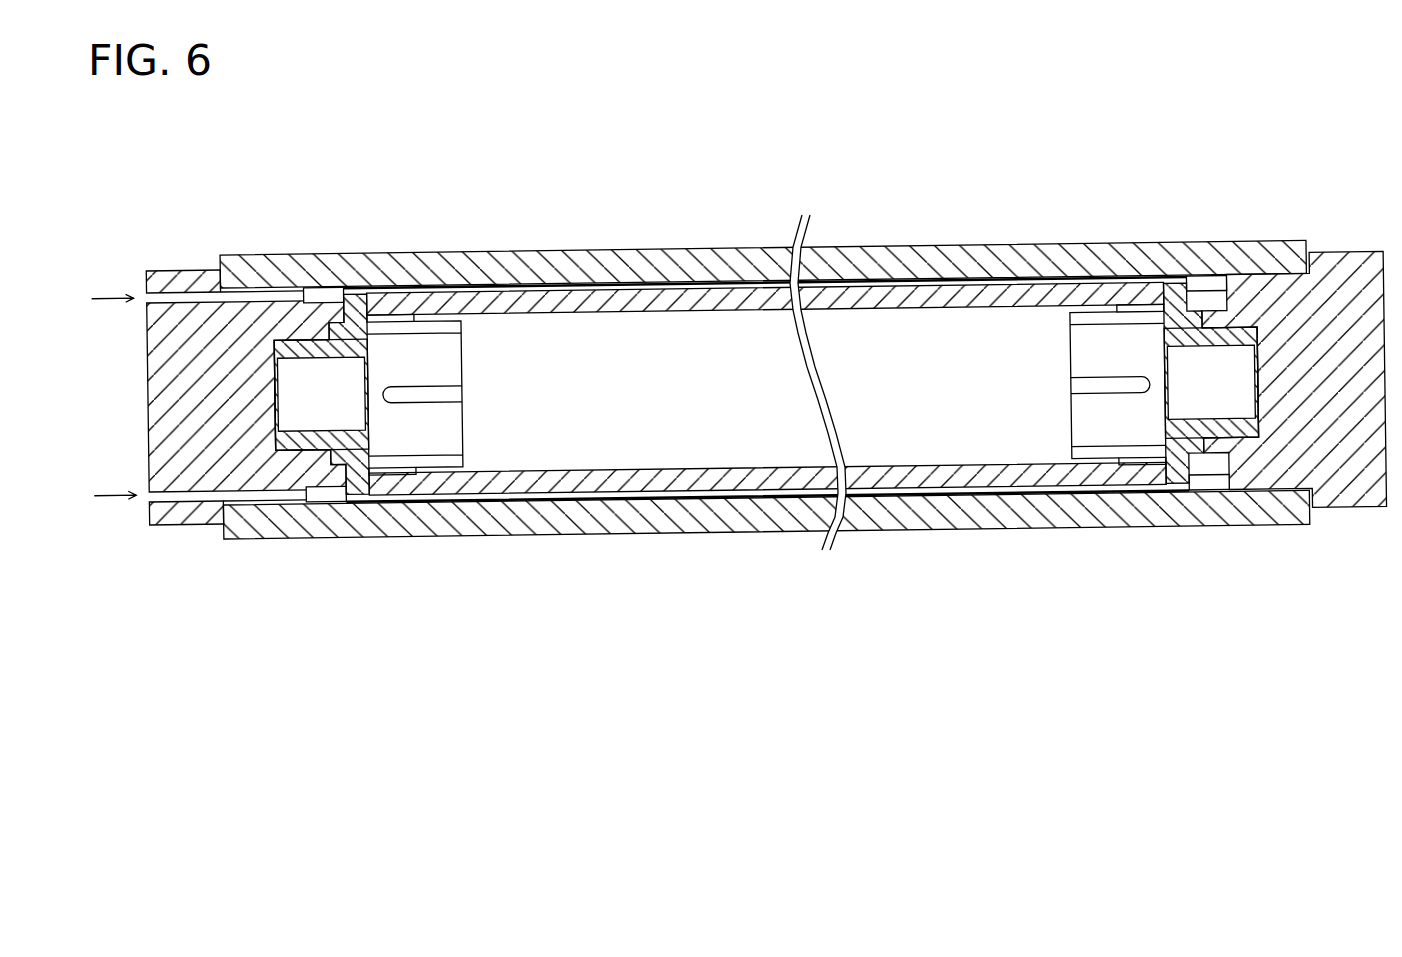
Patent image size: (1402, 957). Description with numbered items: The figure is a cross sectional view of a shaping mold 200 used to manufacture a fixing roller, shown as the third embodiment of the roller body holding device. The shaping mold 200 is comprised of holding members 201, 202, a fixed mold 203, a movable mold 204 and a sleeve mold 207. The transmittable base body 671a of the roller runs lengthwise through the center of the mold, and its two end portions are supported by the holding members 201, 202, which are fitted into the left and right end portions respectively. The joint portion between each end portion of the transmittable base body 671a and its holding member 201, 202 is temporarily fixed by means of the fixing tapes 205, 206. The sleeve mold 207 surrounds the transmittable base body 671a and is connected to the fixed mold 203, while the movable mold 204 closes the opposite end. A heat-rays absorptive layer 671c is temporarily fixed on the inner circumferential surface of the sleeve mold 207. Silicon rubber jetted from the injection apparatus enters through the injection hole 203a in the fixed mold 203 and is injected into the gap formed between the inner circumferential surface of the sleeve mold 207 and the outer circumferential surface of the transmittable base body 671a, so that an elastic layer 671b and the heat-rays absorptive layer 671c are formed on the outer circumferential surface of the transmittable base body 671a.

The shaping mold 200 is at (742, 187).
The holding member 201 is at (340, 290).
The holding member 202 is at (1188, 280).
The fixed mold 203 is at (170, 270).
The injection hole 203a is at (203, 297).
The movable mold 204 is at (1320, 268).
The fixing tape 205 is at (372, 497).
The fixing tape 206 is at (1170, 488).
The sleeve mold 207 is at (600, 250).
The transmittable base body 671a is at (932, 478).
The elastic layer 671b is at (590, 500).
The heat-rays absorptive layer 671c is at (525, 503).